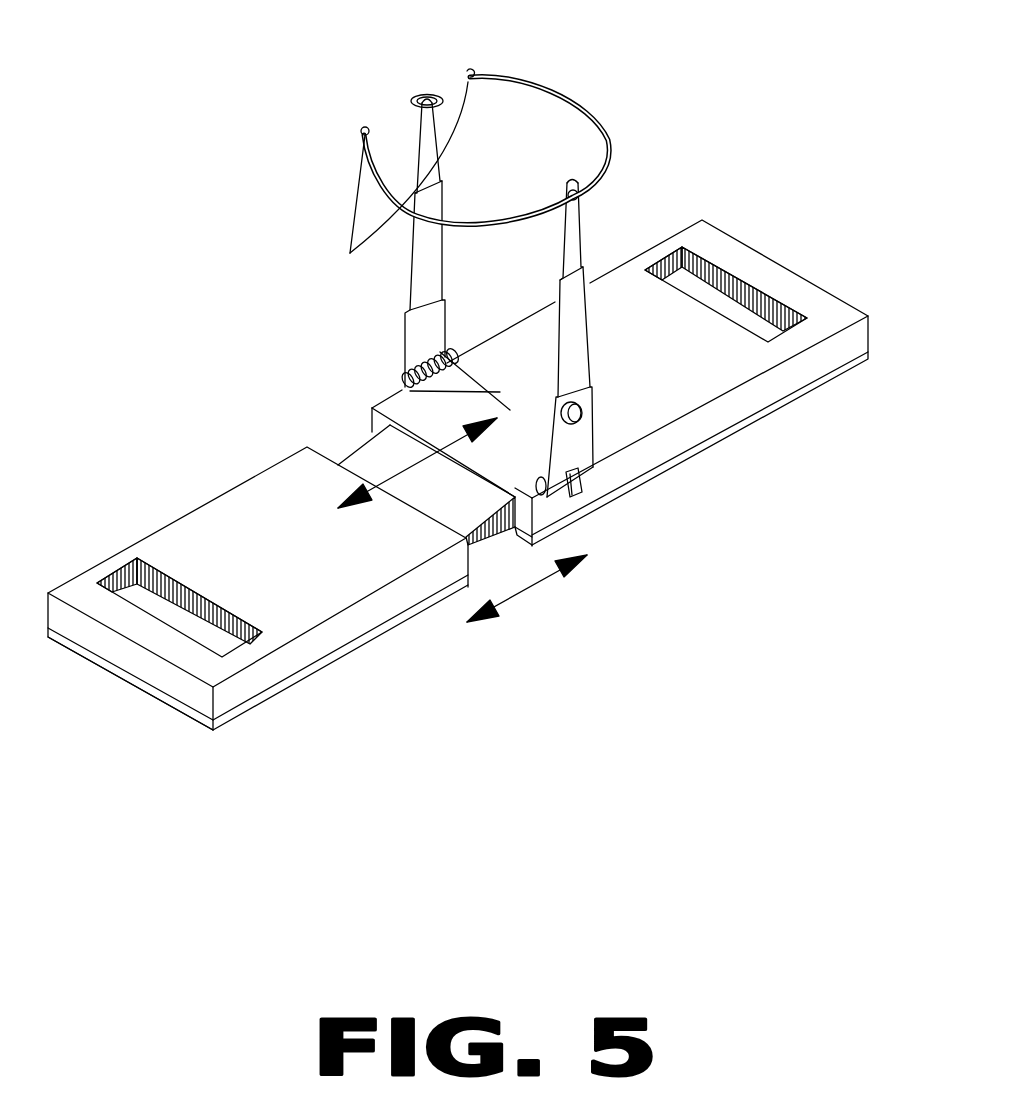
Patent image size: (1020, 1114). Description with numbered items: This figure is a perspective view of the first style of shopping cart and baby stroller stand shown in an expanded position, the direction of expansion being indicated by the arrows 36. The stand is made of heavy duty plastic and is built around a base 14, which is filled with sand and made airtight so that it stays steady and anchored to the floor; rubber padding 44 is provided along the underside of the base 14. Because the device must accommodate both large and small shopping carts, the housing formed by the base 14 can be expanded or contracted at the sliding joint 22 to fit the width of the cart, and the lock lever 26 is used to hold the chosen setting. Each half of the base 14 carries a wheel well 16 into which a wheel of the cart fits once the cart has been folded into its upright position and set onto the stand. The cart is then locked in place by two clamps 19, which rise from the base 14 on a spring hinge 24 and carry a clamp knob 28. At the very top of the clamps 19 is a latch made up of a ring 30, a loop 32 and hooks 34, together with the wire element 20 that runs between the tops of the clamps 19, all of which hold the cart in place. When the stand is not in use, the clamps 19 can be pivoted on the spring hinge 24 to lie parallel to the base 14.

The base 14 is at (782, 275).
The wheel wells 16 is at (140, 603).
The clamps 19 is at (537, 482).
The wire loop 20 is at (567, 100).
The sliding joint 22 is at (422, 480).
The spring hinge 24 is at (447, 355).
The lock lever 26 is at (582, 508).
The clamp knob 28 is at (585, 413).
The ring 30 is at (412, 100).
The loop 32 is at (580, 193).
The hooks 34 is at (384, 185).
The arrows 36 is at (528, 590).
The rubber padding 44 is at (260, 703).